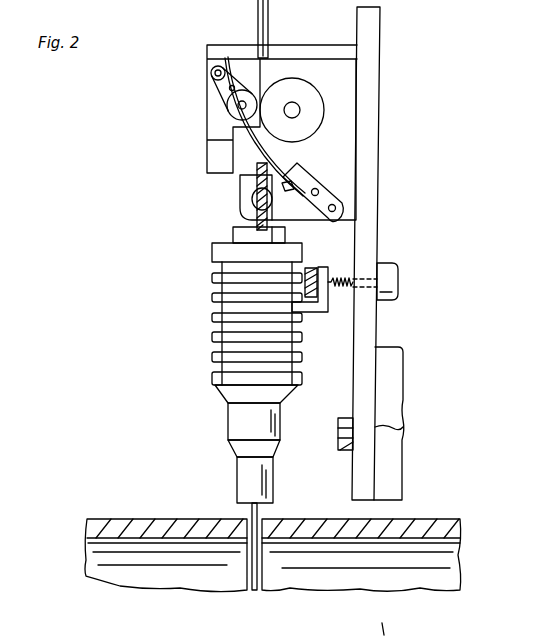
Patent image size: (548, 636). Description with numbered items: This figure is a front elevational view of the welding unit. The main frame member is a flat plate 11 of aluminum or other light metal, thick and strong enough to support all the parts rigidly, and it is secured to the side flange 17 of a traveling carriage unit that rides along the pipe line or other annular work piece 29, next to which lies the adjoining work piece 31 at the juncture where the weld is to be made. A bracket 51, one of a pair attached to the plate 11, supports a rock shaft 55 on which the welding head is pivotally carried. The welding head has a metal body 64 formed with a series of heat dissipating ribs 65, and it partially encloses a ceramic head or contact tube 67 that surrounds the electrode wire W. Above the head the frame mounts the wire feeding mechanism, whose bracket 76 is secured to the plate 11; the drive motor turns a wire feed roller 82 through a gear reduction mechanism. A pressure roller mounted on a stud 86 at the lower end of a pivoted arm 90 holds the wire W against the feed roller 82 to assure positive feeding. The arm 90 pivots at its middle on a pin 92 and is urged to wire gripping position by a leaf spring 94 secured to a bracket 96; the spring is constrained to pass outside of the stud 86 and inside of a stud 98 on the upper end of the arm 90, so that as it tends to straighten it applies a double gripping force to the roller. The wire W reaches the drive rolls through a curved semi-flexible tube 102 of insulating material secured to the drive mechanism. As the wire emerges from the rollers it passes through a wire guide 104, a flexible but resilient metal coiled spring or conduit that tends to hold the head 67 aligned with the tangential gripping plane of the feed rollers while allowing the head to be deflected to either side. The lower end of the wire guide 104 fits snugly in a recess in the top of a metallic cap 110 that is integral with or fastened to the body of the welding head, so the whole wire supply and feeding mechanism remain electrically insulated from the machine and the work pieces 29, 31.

The flat plate 11 is at (367, 32).
The curved semi-flexible tube 102 is at (268, 17).
The bracket 76 is at (318, 47).
The wire feed roller 82 is at (305, 92).
The stud 86 is at (238, 108).
The stud 98 is at (213, 72).
The pin 92 is at (230, 88).
The pivoted arm 90 is at (247, 70).
The leaf spring 94 is at (283, 165).
The bracket 96 is at (312, 198).
The bracket 51 is at (315, 221).
The wire guide 104 is at (255, 182).
The rock shaft 55 is at (253, 200).
The metallic cap 110 is at (233, 231).
The metal body 64 is at (212, 250).
The heat dissipating ribs 65 is at (212, 353).
The ceramic head 67 is at (237, 460).
The side flange 17 is at (390, 427).
The work piece 31 is at (162, 517).
The work piece 29 is at (453, 523).
The electrode wire W is at (262, 515).